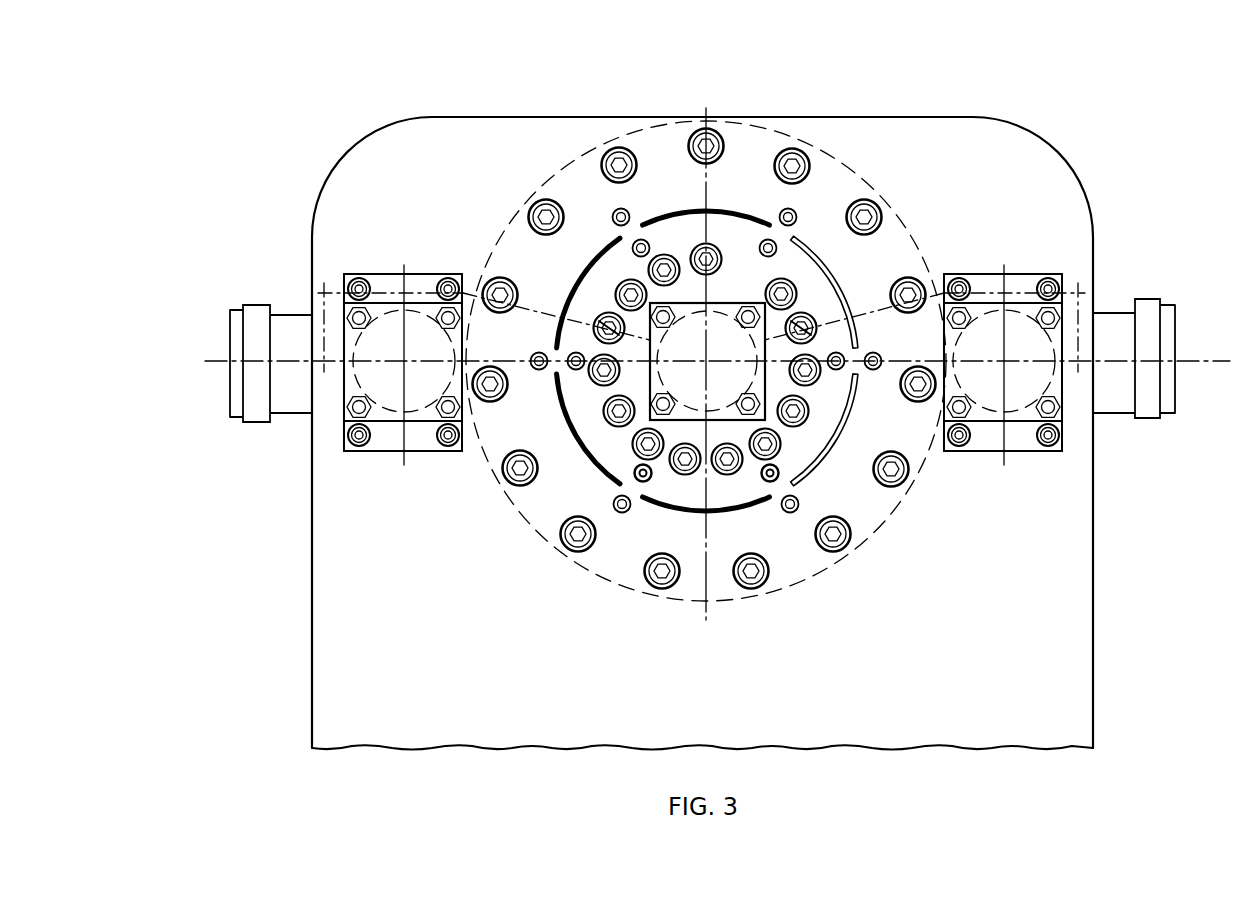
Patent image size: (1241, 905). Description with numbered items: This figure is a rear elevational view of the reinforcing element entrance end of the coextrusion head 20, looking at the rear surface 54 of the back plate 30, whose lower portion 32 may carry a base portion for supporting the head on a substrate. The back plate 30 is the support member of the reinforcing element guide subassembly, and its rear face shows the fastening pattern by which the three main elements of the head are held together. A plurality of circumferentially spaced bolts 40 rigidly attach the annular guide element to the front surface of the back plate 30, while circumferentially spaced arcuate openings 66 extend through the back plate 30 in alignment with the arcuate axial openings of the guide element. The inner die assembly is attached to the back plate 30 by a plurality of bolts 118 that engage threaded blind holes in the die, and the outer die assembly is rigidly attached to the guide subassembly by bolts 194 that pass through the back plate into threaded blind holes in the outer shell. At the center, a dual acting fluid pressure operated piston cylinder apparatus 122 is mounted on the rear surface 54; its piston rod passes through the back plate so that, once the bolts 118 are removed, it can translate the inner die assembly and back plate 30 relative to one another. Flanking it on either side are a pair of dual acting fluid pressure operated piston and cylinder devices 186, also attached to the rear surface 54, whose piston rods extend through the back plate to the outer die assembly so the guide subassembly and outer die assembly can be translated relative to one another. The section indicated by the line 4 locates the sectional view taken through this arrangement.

The coextrusion head 20 is at (258, 163).
The back plate 30 is at (1078, 177).
The lower portion 32 is at (430, 728).
The bolts 40 is at (780, 214).
The rear surface 54 is at (1022, 172).
The arcuate openings 66 is at (822, 268).
The bolts 118 is at (796, 292).
The dual acting fluid pressure operated piston cylinder apparatus 122 is at (707, 361).
The dual acting fluid pressure operated piston and cylinder devices 186 is at (701, 365).
The bolts 194 is at (810, 166).
The section line 4- 4 is at (191, 391).